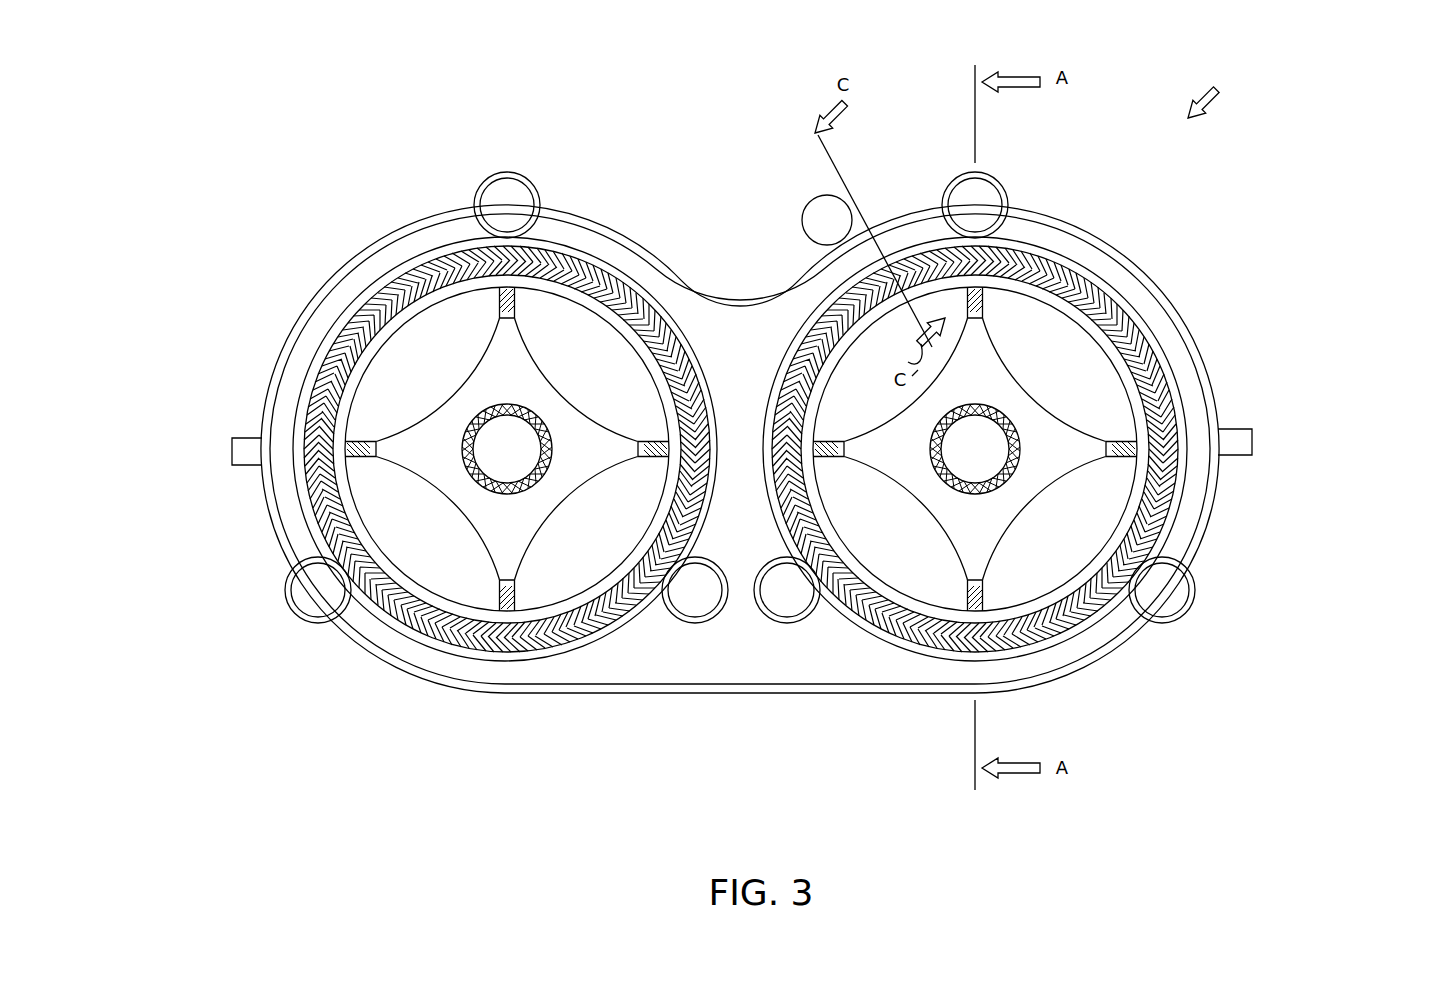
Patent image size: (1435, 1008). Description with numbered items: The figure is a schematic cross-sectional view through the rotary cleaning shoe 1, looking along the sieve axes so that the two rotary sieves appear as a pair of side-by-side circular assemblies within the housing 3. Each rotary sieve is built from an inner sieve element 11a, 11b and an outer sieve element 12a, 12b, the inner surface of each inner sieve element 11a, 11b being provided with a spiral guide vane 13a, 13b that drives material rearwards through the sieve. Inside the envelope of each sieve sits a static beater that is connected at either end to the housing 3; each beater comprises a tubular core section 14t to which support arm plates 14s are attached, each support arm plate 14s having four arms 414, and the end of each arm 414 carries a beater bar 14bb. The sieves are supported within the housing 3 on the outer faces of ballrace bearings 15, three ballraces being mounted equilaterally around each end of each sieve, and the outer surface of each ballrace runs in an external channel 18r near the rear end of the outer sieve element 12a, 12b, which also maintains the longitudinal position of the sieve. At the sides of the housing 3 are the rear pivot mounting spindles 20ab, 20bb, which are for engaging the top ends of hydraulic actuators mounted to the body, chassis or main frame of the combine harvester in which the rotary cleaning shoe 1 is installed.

The rotary cleaning shoe 1 is at (1212, 95).
The housing 3 is at (1125, 300).
The inner sieve element 11a is at (1222, 445).
The inner sieve element 11b is at (355, 305).
The outer sieve element 12a is at (1195, 355).
The outer sieve element 12b is at (403, 222).
The spiral guide vane 13a is at (1200, 518).
The spiral guide vane 13b is at (472, 600).
The beater bar 14bb is at (563, 297).
The support arm plate 14s is at (400, 452).
The tubular core section 14t is at (480, 407).
The ballrace bearing 15 is at (522, 183).
The external channel 18r is at (390, 267).
The pivot mounting spindle 20ab is at (1252, 432).
The pivot mounting spindle 20bb is at (232, 448).
The arm 414 is at (482, 365).